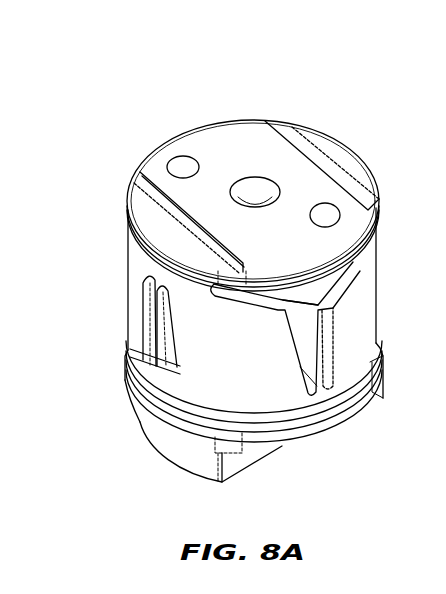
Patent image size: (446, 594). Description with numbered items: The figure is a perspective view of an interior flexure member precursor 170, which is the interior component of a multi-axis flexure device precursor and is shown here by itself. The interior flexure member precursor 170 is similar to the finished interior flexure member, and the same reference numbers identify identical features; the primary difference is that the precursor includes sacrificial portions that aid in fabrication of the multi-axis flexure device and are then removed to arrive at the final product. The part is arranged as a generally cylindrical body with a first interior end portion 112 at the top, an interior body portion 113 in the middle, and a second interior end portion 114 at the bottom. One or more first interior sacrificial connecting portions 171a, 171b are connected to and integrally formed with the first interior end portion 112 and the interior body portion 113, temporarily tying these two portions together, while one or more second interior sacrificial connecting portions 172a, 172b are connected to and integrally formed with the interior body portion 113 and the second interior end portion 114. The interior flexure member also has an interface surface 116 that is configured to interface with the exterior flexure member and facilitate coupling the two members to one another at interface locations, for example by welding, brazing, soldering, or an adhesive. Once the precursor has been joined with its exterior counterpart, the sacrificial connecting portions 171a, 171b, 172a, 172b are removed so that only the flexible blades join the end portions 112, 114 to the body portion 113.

The interior flexure member precursor 170 is at (173, 78).
The first interior end portion 112 is at (244, 132).
The first interior sacrificial connecting portion 171b is at (330, 153).
The first interior sacrificial connecting portion 171a is at (173, 229).
The interface surface 116 is at (147, 222).
The second interior sacrificial connecting portion 172b is at (128, 364).
The interior body portion 113 is at (270, 395).
The second interior sacrificial connecting portion 172a is at (241, 449).
The second interior end portion 114 is at (180, 455).